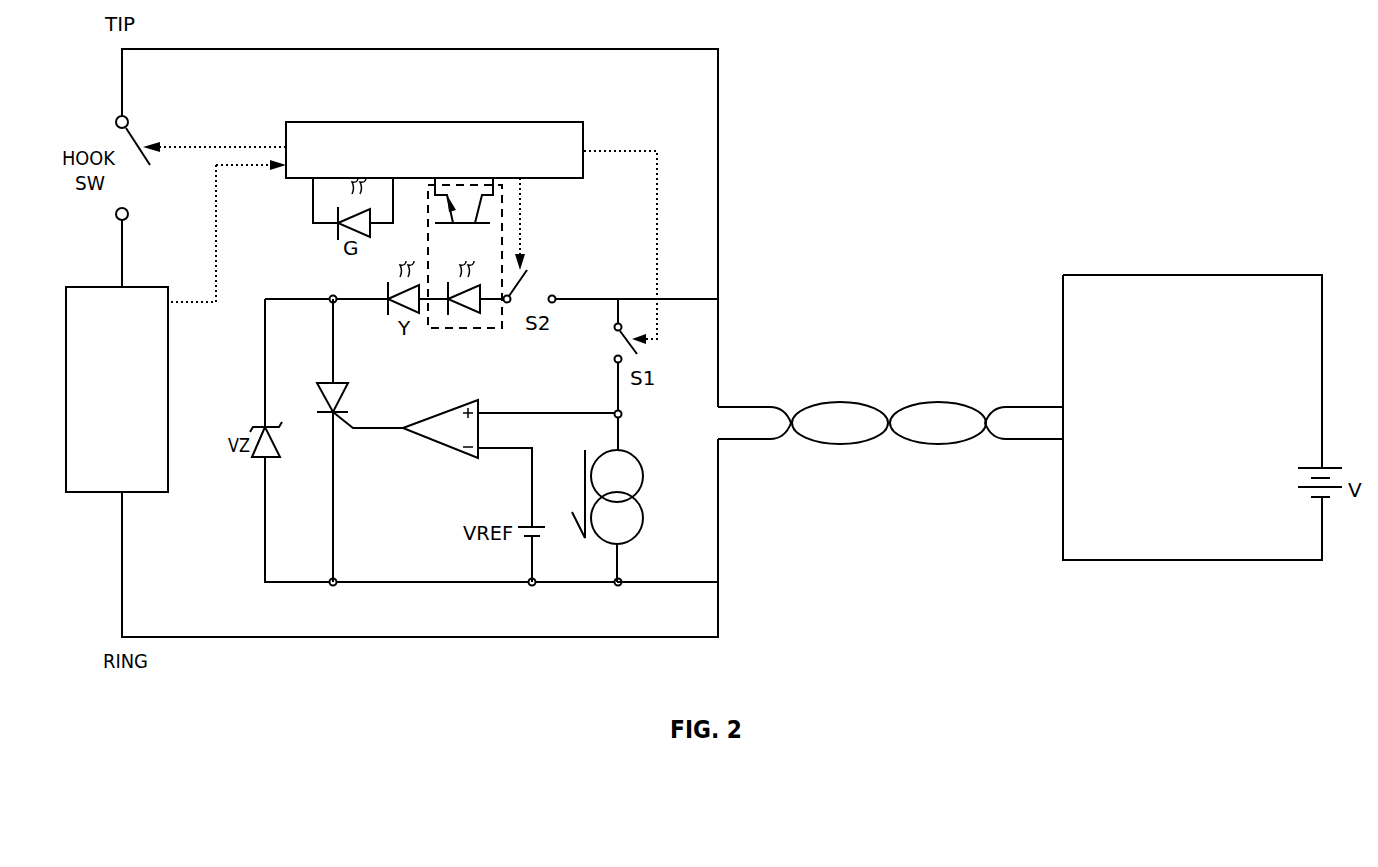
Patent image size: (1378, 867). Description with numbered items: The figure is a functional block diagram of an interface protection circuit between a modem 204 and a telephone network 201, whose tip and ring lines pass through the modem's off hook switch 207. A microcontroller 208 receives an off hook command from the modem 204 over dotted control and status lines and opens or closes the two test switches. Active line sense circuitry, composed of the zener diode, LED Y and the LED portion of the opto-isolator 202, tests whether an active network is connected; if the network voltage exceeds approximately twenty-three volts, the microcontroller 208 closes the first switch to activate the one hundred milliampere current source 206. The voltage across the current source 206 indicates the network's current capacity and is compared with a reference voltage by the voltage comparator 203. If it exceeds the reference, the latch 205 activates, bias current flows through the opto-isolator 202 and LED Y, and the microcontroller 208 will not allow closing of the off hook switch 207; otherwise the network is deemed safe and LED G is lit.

The telephone network 201 is at (852, 403).
The opto-isolator 202 is at (440, 327).
The voltage comparator 203 is at (447, 450).
The modem 204 is at (66, 423).
The latch 205 is at (338, 383).
The 100 mA current source 206 is at (642, 523).
The off hook switch 207 is at (128, 116).
The microcontroller 208 is at (460, 122).